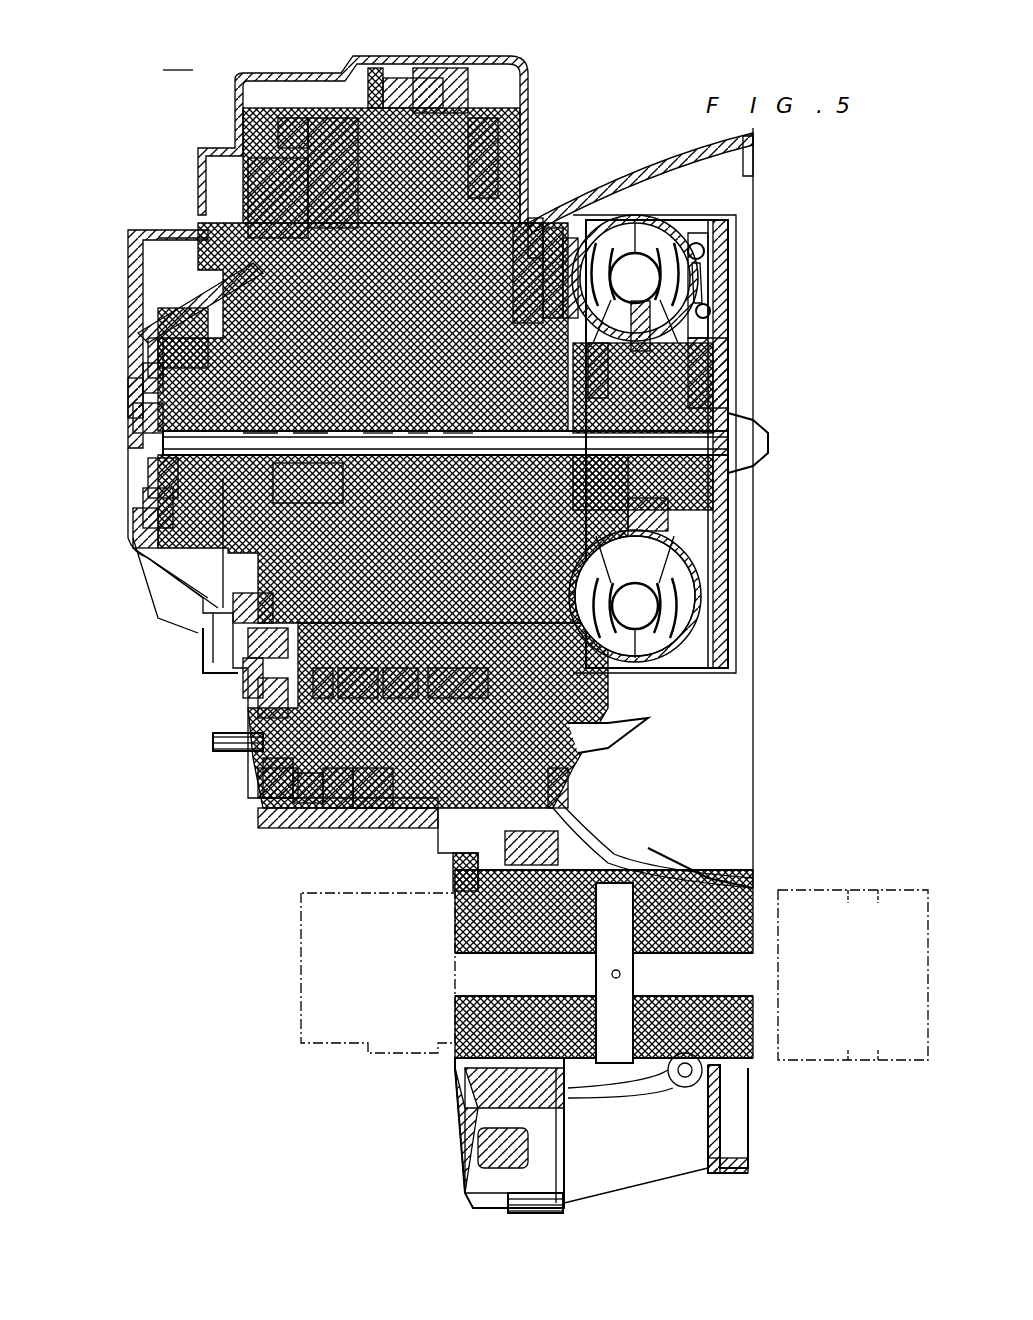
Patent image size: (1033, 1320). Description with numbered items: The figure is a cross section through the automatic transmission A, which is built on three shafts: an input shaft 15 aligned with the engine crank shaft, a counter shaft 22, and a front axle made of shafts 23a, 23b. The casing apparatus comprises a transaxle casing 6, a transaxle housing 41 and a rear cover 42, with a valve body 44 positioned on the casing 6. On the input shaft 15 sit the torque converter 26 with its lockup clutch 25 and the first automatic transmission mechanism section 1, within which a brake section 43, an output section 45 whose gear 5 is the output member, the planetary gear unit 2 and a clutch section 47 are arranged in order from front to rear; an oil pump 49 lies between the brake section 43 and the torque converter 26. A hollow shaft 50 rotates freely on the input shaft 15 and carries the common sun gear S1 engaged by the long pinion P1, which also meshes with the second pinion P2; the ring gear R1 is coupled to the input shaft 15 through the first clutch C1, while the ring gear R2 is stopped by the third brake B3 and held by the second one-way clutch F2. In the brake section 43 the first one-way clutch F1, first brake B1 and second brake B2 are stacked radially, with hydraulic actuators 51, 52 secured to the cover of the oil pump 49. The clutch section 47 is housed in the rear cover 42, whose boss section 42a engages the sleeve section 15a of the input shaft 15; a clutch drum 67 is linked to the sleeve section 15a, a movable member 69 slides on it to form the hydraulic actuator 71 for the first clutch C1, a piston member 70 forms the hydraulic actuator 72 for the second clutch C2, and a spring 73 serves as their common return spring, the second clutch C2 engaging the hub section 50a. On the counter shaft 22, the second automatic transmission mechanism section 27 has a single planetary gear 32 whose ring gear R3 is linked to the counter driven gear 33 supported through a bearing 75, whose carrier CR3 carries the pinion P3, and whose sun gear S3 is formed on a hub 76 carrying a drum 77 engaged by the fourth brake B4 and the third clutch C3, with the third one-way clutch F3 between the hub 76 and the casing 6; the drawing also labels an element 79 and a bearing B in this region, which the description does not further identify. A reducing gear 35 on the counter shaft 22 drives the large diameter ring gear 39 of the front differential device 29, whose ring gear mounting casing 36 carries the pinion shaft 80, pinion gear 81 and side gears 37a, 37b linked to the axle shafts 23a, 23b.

The automatic transmission A is at (178, 95).
The first automatic transmission mechanism section 1 is at (180, 222).
The planetary gear unit 2 is at (285, 145).
The gear 5 is at (435, 65).
The transaxle casing 6 is at (528, 215).
The input shaft 15 is at (725, 480).
The sleeve section 15a is at (125, 385).
The counter shaft 22 is at (205, 730).
The front axle shaft 23a is at (410, 1045).
The front axle shaft 23b is at (800, 1052).
The lockup clutch 25 is at (705, 250).
The torque converter 26 is at (650, 210).
The second automatic transmission mechanism section 27 is at (190, 640).
The front differential device 29 is at (665, 870).
The single planetary gear 32 is at (348, 878).
The counter driven gear 33 is at (412, 878).
The reducing gear 35 is at (560, 785).
The ring gear mounting casing 36 is at (600, 862).
The side gear 37a is at (565, 1100).
The side gear 37b is at (740, 1100).
The large diameter ring gear 39 is at (498, 1185).
The transaxle housing 41 is at (672, 160).
The rear cover 42 is at (240, 660).
The boss section 42a is at (130, 405).
The brake section 43 is at (478, 118).
The valve body 44 is at (290, 68).
The output section 45 is at (400, 75).
The clutch section 47 is at (160, 240).
The oil pump 49 is at (560, 235).
The hollow shaft 50 is at (335, 432).
The hub section 50a is at (205, 605).
The hydraulic actuator 51 is at (722, 340).
The hydraulic actuator 52 is at (545, 225).
The clutch drum 67 is at (140, 335).
The movable member 69 is at (140, 495).
The piston member 70 is at (130, 515).
The hydraulic actuator 71 is at (145, 470).
The hydraulic actuator 72 is at (150, 560).
The spring 73 is at (135, 365).
The bearing 75 is at (590, 745).
The hub 76 is at (310, 675).
The drum 77 is at (300, 805).
The clutch drum 79 is at (258, 775).
The pinion shaft 80 is at (612, 1055).
The pinion gear 81 is at (670, 1080).
The bearing B is at (388, 432).
The first brake B1 is at (595, 340).
The second brake B2 is at (520, 220).
The third brake B3 is at (320, 200).
The fourth brake B4 is at (330, 805).
The first clutch C1 is at (250, 270).
The second clutch C2 is at (155, 305).
The third clutch C3 is at (255, 800).
The carrier CR3 is at (408, 710).
The first one-way clutch F1 is at (420, 432).
The second one-way clutch F2 is at (365, 65).
The third one-way clutch F3 is at (255, 680).
The long pinion P1 is at (270, 432).
The second pinion P2 is at (290, 510).
The pinion P3 is at (368, 700).
The ring gear R1 is at (230, 600).
The ring gear R2 is at (245, 630).
The ring gear R3 is at (370, 805).
The sun gear S1 is at (260, 440).
The sun gear S3 is at (325, 700).